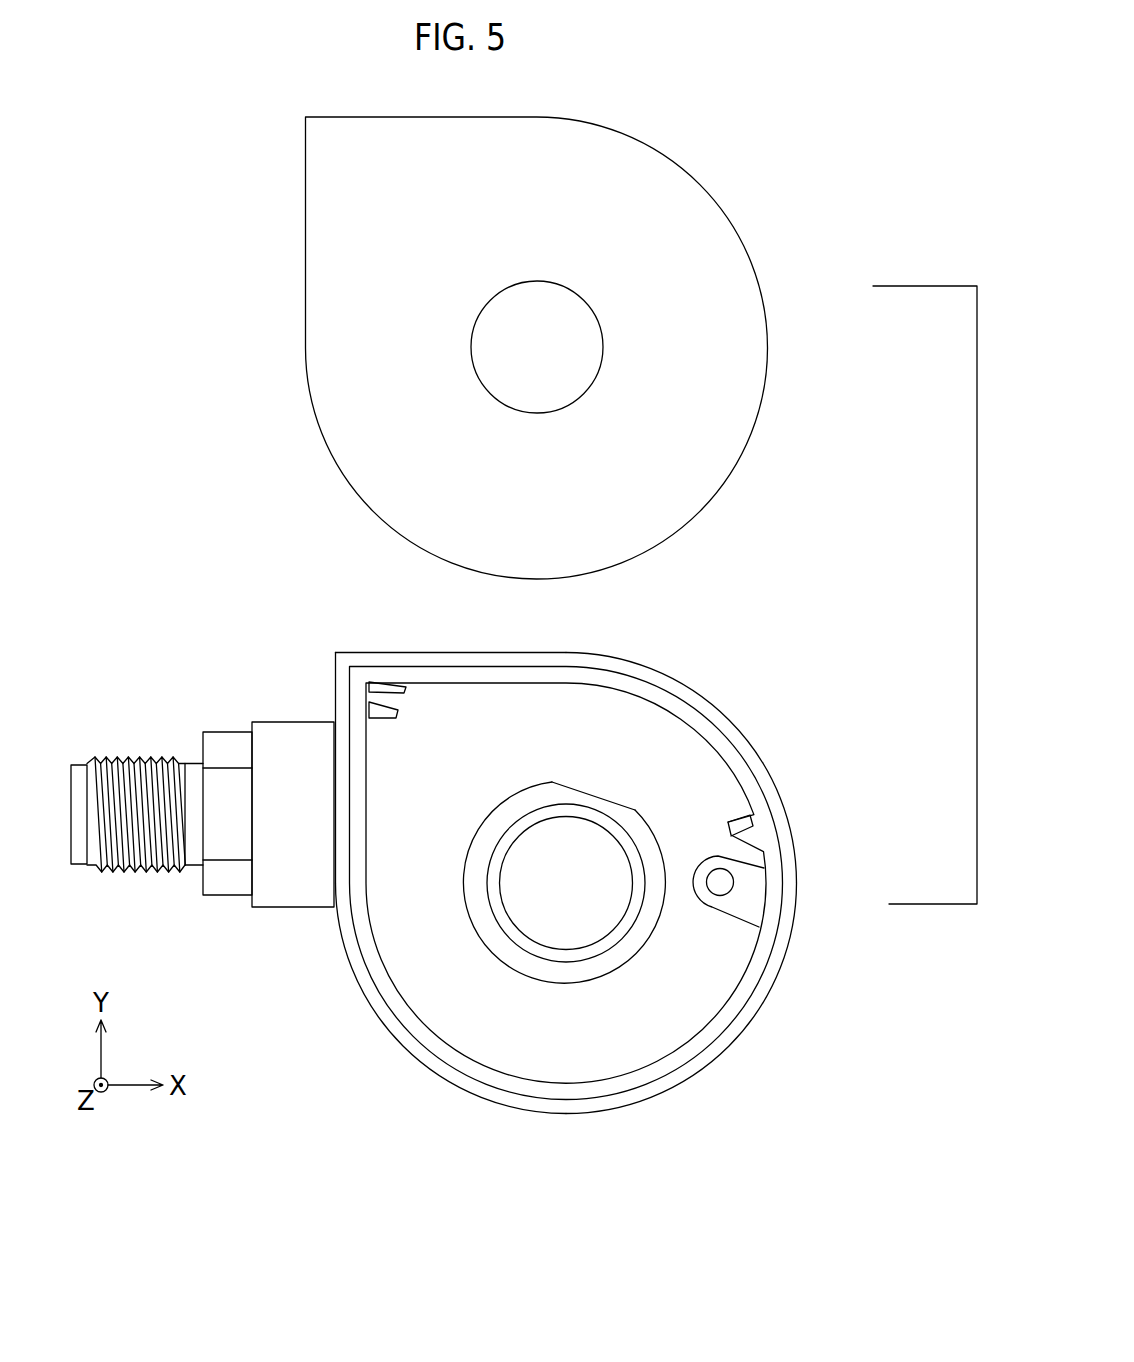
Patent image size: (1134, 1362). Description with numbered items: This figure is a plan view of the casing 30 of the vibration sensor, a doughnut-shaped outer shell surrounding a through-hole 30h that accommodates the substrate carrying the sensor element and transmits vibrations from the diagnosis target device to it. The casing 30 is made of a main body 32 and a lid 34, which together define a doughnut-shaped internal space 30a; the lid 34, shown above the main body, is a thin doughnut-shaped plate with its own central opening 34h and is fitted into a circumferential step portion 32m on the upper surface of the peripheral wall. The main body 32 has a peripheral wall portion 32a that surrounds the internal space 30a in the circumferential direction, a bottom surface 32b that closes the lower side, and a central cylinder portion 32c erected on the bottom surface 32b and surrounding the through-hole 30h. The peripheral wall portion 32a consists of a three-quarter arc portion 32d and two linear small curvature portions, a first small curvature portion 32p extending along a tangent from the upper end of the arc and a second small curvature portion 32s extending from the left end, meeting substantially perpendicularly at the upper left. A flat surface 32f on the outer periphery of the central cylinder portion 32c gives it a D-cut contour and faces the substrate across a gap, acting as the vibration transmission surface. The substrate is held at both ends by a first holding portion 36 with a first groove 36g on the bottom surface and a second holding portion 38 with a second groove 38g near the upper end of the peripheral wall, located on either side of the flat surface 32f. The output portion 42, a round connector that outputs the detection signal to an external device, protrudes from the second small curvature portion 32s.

The casing 30 is at (800, 177).
The internal space 30a is at (688, 752).
The through-hole 30h is at (578, 957).
The main body 32 is at (495, 1120).
The peripheral wall portion 32a is at (797, 916).
The bottom surface 32b is at (402, 961).
The central cylinder portion 32c is at (647, 922).
The arc portion 32d is at (634, 1101).
The flat surface 32f is at (587, 795).
The circumferential step portion 32m is at (729, 1007).
The first small curvature portion 32p is at (380, 651).
The second small curvature portion 32s is at (334, 706).
The lid 34 is at (304, 341).
The cover hole 34h is at (556, 408).
The first holding portion 36 is at (383, 716).
The first groove 36g is at (378, 690).
The second holding portion 38 is at (768, 849).
The second groove 38g is at (750, 815).
The output portion 42 is at (192, 771).